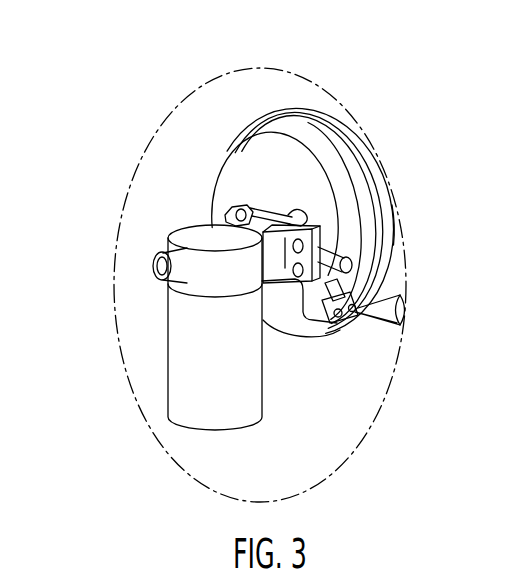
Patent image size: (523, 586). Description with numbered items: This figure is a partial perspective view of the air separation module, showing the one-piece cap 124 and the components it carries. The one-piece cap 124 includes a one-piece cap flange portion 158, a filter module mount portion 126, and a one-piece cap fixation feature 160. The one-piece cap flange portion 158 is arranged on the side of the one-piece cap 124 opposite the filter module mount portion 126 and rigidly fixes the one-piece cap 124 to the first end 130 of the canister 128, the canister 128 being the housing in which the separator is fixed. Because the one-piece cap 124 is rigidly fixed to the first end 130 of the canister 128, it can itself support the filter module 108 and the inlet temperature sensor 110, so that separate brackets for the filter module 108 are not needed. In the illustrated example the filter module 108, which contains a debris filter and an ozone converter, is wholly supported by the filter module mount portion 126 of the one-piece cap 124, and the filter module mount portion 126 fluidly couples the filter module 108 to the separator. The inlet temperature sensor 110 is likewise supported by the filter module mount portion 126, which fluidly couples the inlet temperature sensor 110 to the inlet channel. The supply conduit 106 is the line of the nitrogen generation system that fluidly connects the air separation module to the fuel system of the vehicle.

The supply conduit 106 is at (119, 429).
The filter module 108 is at (197, 242).
The inlet temperature sensor 110 is at (347, 264).
The one-piece cap 124 is at (250, 161).
The filter module mount portion 126 is at (288, 217).
The canister 128 is at (356, 129).
The first end 130 is at (336, 102).
The one-piece cap flange portion 158 is at (322, 137).
The one-piece cap fixation feature 160 is at (343, 333).